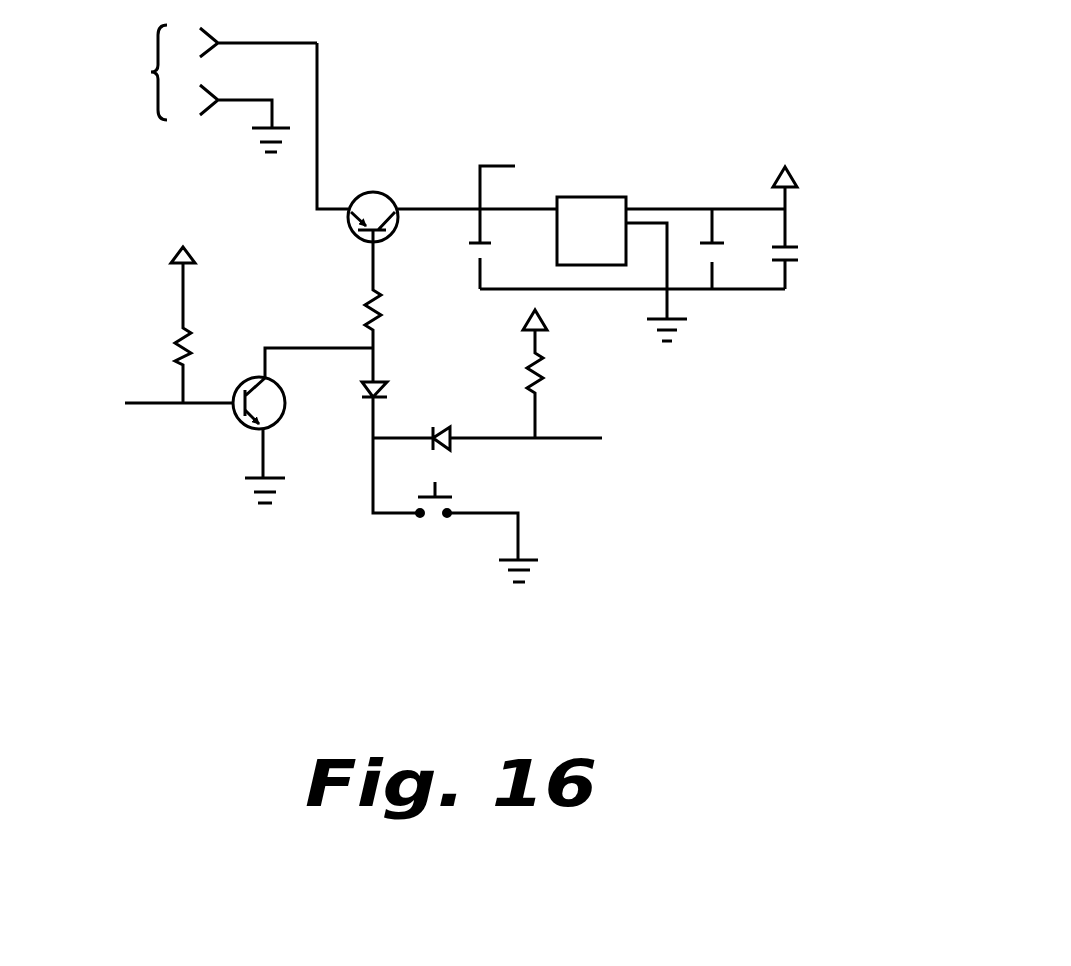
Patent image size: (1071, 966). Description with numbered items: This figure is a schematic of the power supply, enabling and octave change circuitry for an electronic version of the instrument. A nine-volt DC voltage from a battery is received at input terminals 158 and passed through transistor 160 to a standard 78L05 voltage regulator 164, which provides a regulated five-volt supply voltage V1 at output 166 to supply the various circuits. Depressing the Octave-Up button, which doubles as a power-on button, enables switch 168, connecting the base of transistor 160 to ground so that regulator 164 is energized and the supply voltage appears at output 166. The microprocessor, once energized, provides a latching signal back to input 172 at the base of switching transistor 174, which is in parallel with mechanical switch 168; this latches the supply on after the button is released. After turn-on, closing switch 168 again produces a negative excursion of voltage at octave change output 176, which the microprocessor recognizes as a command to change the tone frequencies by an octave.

The input terminals 158 is at (207, 88).
The transistor 160 is at (375, 193).
The voltage regulator 164 is at (605, 197).
The output 166 is at (788, 195).
The switch 168 is at (470, 496).
The input 172 is at (150, 408).
The switching transistor 174 is at (248, 378).
The octave change output 176 is at (563, 438).